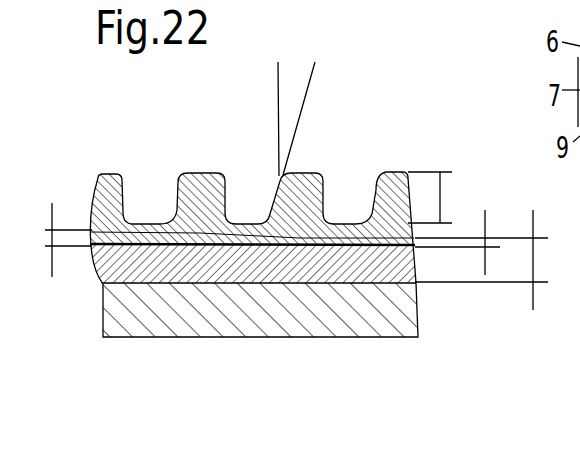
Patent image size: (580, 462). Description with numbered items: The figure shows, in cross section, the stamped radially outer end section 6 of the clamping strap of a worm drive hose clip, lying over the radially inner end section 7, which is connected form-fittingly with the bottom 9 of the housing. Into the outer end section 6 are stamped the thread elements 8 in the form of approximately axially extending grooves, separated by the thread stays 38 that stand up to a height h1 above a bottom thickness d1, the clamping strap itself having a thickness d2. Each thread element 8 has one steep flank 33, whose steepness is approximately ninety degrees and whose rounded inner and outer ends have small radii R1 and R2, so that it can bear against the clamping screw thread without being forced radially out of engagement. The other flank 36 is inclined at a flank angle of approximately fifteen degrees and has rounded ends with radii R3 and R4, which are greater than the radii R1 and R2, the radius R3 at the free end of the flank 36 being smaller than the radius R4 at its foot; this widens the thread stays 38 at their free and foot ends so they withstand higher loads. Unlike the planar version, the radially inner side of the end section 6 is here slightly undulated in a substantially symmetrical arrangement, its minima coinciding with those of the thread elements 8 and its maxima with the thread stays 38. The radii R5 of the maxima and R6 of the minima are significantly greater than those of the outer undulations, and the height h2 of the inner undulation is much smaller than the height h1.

The flank 36 is at (173, 196).
The thread stay 38 is at (202, 200).
The flank 33 is at (335, 205).
The thread element 8 is at (348, 197).
The radially outer end section 6 is at (262, 244).
The radially inner end section 7 is at (336, 267).
The bottom 9 is at (117, 322).
The radius R1 is at (223, 172).
The radius R2 is at (232, 217).
The radius R3 is at (185, 171).
The radius R4 is at (163, 210).
The radius of the maxima R5 is at (186, 243).
The radius of the minima R6 is at (236, 244).
The height h1 is at (440, 197).
The height h2 is at (481, 233).
The bottom thickness d1 is at (57, 240).
The clamping strap thickness d2 is at (490, 260).